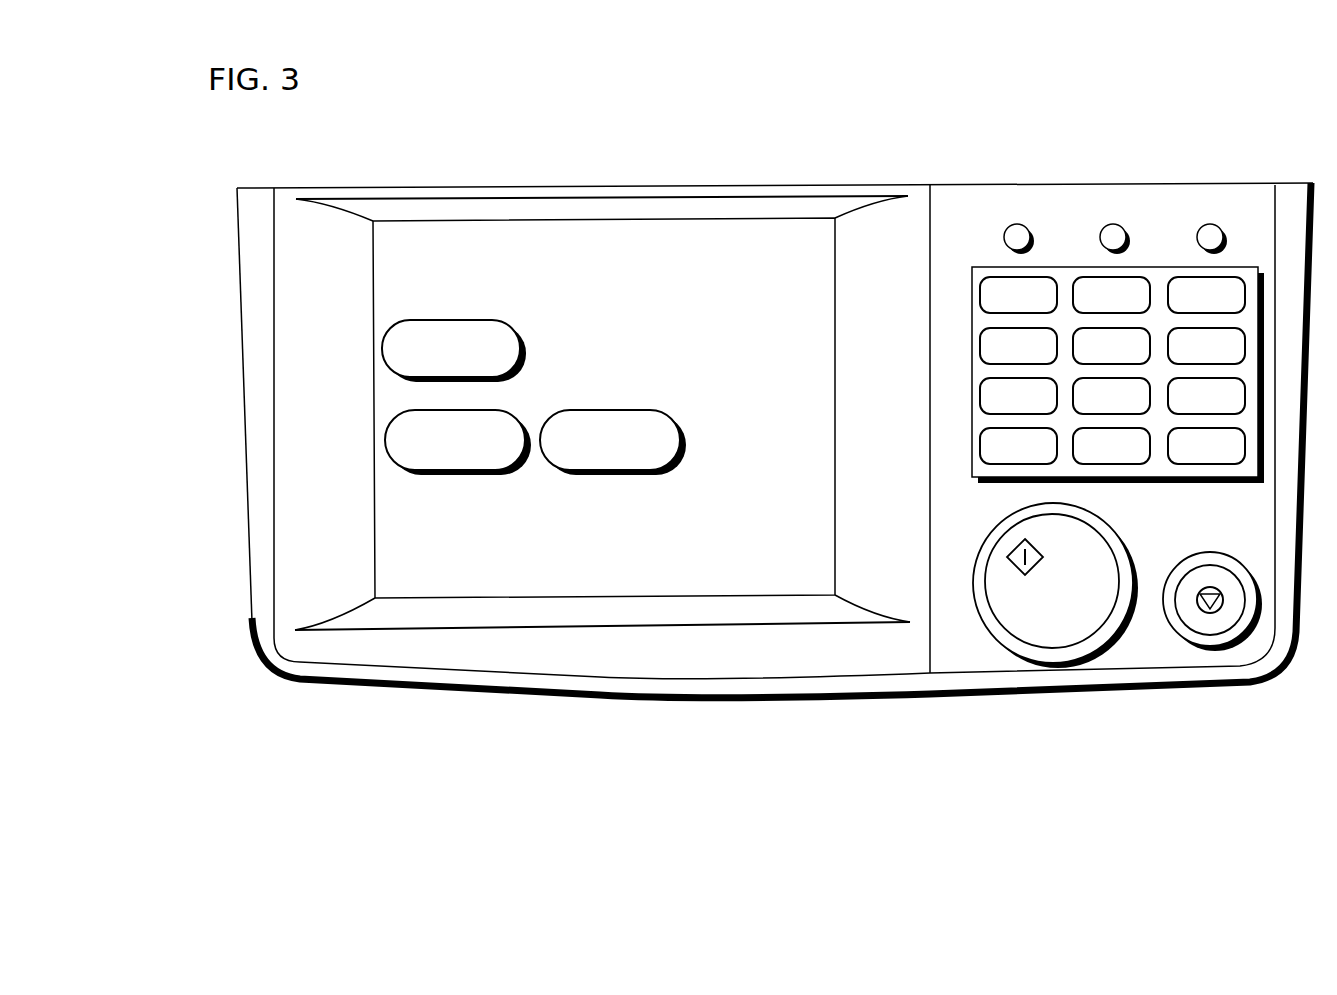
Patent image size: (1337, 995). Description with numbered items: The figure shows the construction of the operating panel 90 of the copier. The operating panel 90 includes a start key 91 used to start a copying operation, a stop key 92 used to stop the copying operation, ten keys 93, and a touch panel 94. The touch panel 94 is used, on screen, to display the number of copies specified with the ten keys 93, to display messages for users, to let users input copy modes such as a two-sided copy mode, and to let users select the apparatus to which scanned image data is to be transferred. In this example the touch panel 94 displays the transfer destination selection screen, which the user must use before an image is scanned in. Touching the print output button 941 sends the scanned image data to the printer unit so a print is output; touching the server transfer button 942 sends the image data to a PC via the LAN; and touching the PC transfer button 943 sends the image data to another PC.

The operating panel 90 is at (832, 173).
The start key 91 is at (1003, 610).
The stop key 92 is at (1187, 612).
The ten keys 93 is at (1000, 267).
The touch panel 94 is at (485, 237).
The print output button 941 is at (527, 335).
The server transfer button 942 is at (472, 477).
The PC transfer button 943 is at (618, 477).